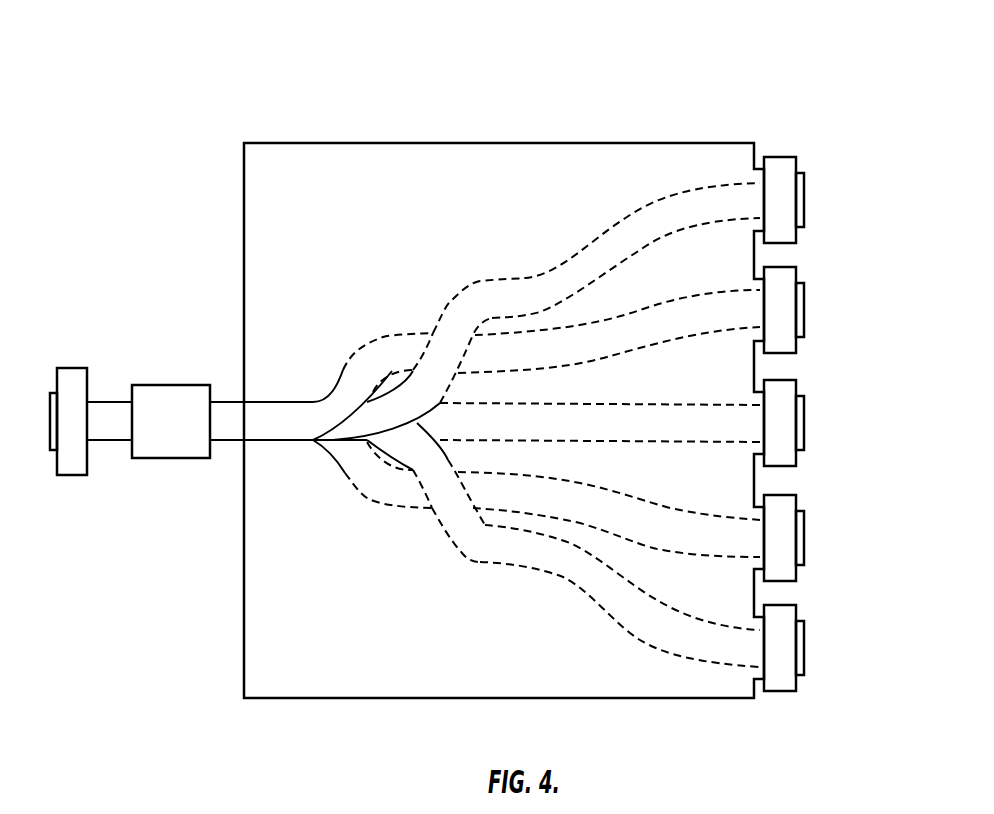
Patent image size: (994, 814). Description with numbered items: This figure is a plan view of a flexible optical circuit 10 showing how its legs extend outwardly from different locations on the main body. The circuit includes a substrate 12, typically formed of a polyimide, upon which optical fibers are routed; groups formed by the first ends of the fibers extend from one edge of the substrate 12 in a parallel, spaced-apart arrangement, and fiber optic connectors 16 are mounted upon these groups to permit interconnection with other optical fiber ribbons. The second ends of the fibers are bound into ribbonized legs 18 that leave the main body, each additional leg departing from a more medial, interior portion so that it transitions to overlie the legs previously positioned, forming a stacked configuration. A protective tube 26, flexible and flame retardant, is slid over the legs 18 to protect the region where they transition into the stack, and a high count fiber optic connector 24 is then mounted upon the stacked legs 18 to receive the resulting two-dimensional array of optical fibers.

The flexible optical circuit 10 is at (676, 92).
The substrate 12 is at (578, 158).
The fiber optic connector 16 is at (787, 167).
The leg 18 is at (447, 312).
The fiber optic connector 24 is at (72, 476).
The protective tube 26 is at (170, 459).